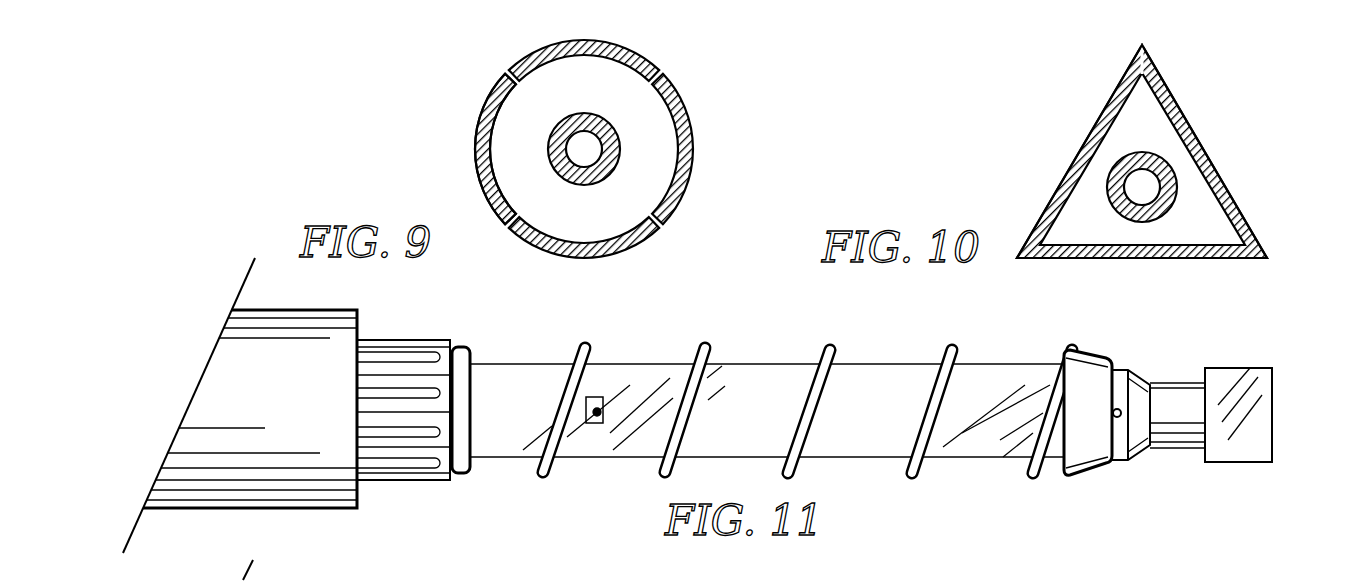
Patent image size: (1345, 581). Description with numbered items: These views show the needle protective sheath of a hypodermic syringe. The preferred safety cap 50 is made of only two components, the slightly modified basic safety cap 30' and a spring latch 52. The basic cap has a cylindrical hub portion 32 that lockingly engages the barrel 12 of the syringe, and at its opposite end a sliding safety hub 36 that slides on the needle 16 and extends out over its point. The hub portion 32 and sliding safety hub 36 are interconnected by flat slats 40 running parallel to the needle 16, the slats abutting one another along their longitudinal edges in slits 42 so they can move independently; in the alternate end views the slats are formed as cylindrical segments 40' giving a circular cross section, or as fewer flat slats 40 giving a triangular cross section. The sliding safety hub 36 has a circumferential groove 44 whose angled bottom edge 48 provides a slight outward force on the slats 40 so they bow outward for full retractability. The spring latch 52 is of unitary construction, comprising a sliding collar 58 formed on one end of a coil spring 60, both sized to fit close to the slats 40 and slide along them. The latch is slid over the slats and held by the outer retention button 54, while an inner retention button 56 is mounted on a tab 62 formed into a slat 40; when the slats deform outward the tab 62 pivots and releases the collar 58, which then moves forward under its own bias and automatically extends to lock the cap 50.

In FIG. 11, the barrel 12 is at (232, 377).
In FIG. 9, the needle 16 is at (619, 172).
In FIG. 10, the needle 16 is at (1158, 157).
In FIG. 11, the basic safety cap 30' is at (768, 481).
In FIG. 11, the hub portion 32 is at (385, 447).
In FIG. 11, the sliding safety hub 36 is at (1240, 378).
In FIG. 10, the flat slats 40 is at (1136, 178).
In FIG. 11, the flat slats 40 is at (768, 354).
In FIG. 9, the cylindrical segments 40' is at (595, 175).
In FIG. 9, the slits 42 is at (663, 74).
In FIG. 10, the slits 42 is at (1268, 258).
In FIG. 11, the circumferential groove 44 is at (1185, 459).
In FIG. 11, the bottom edge 48 is at (1147, 448).
In FIG. 11, the safety cap 50 is at (738, 340).
In FIG. 11, the spring latch 52 is at (850, 352).
In FIG. 11, the outer retention button 54 is at (1118, 408).
In FIG. 11, the inner retention button 56 is at (600, 423).
In FIG. 11, the sliding collar 58 is at (1080, 442).
In FIG. 11, the coil spring 60 is at (918, 448).
In FIG. 11, the tab 62 is at (595, 397).